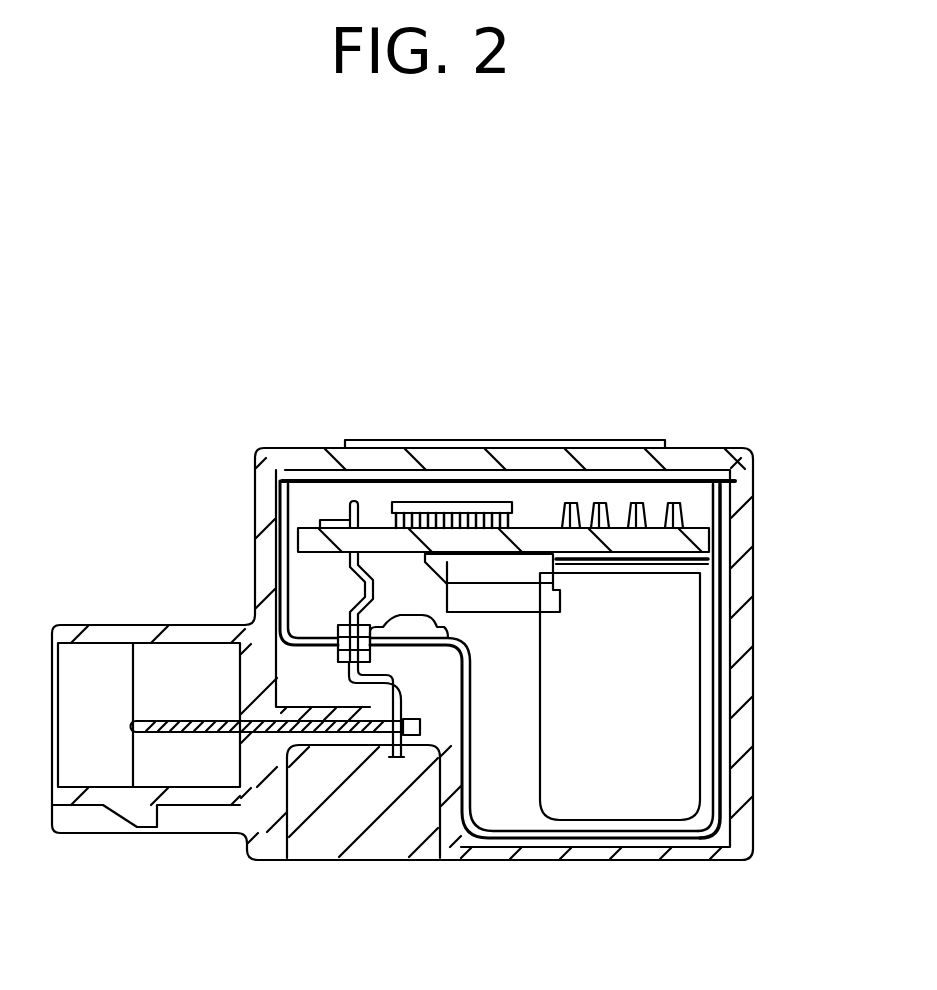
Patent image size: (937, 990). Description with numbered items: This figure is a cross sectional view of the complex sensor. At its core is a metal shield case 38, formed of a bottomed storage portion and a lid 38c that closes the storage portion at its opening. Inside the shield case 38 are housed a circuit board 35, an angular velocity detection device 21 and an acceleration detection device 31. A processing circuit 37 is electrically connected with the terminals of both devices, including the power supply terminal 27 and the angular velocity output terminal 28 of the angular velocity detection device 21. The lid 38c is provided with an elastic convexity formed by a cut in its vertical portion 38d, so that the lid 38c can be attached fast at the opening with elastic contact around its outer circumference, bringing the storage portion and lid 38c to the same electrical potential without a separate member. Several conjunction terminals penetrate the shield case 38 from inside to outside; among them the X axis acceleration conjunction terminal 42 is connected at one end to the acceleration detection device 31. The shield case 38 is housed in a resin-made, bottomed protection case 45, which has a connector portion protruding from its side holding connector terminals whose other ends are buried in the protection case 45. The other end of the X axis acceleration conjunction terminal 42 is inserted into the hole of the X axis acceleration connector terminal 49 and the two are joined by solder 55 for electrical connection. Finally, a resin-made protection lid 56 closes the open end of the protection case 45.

The angular velocity detection device 21 is at (658, 747).
The power supply terminal 27 is at (688, 490).
The angular velocity output terminal 28 is at (562, 527).
The acceleration detection device 31 is at (527, 613).
The circuit board 35 is at (650, 530).
The processing circuit 37 is at (462, 502).
The metal shield case 38 is at (740, 606).
The lid 38c is at (283, 482).
The vertical portion 38d is at (275, 523).
The X axis acceleration conjunction terminal 42 is at (355, 602).
The protection case 45 is at (738, 788).
The X axis acceleration connector terminal 49 is at (195, 726).
The solder 55 is at (383, 745).
The protection lid 56 is at (386, 457).